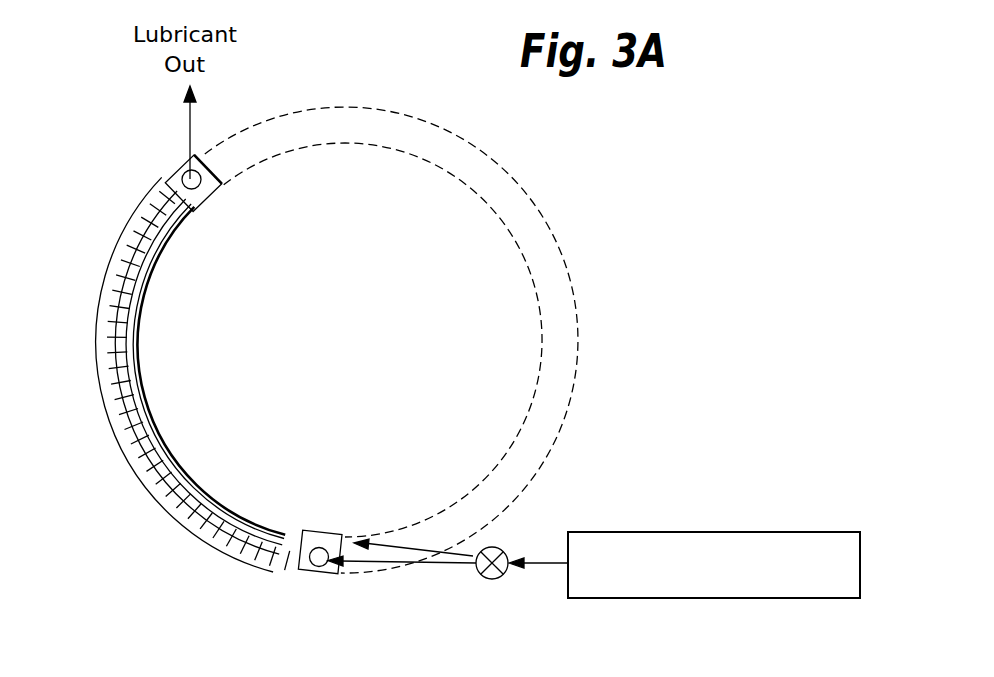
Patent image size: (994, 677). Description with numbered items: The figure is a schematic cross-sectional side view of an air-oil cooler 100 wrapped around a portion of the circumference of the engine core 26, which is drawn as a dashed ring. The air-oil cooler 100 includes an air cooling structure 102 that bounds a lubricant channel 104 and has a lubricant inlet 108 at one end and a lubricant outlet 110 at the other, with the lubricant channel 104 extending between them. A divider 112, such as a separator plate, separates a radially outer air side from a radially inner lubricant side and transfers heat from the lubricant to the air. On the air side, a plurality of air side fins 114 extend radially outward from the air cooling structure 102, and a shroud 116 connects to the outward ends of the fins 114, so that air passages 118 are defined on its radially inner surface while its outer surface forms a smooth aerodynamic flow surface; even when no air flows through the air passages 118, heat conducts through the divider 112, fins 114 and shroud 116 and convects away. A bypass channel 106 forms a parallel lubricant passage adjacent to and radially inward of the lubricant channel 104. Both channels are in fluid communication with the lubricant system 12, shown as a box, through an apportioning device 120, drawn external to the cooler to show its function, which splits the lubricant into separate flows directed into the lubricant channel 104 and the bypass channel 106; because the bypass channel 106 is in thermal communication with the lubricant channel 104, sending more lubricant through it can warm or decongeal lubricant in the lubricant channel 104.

The lubricant system 12 is at (727, 533).
The engine core 26 is at (340, 348).
The air-oil cooler 100 is at (187, 356).
The air cooling structure 102 is at (107, 334).
The lubricant channel 104 is at (223, 515).
The bypass channel 106 is at (158, 428).
The lubricant inlet 108 is at (312, 574).
The lubricant outlet 110 is at (208, 201).
The divider 112 is at (143, 278).
The air side fins 114 is at (142, 448).
The shroud 116 is at (112, 400).
The air passages 118 is at (168, 488).
The apportioning device 120 is at (478, 577).